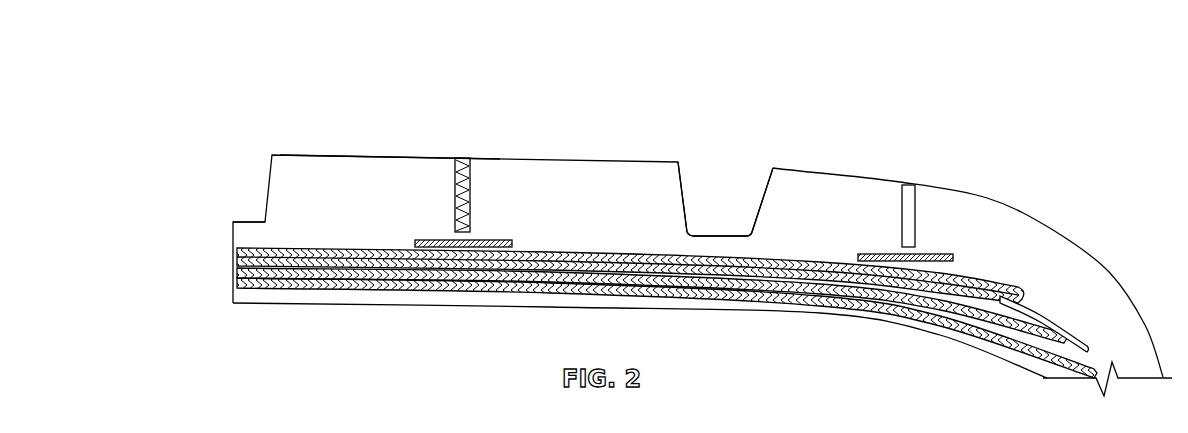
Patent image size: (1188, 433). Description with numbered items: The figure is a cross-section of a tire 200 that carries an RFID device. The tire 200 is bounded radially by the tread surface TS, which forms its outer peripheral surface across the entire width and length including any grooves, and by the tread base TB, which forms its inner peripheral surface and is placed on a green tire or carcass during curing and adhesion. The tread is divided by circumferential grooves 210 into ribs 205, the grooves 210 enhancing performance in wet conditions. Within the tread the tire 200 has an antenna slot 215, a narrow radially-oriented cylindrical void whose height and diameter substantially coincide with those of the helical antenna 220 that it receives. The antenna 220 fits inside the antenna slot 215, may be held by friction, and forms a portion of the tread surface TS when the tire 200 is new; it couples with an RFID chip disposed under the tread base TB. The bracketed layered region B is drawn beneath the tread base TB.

The tire 200 is at (329, 65).
The ribs 205 is at (312, 155).
The circumferential grooves 210 is at (723, 200).
The antenna slot 215 is at (455, 195).
The helical antenna 220 is at (467, 157).
The tread surface TS is at (283, 145).
The tread base TB is at (226, 226).
The laminate base layers B is at (232, 248).